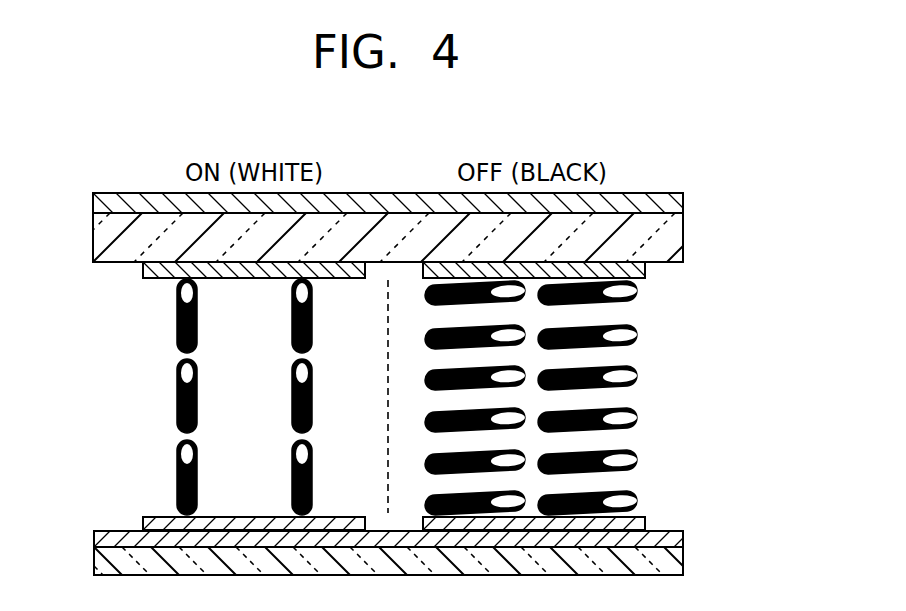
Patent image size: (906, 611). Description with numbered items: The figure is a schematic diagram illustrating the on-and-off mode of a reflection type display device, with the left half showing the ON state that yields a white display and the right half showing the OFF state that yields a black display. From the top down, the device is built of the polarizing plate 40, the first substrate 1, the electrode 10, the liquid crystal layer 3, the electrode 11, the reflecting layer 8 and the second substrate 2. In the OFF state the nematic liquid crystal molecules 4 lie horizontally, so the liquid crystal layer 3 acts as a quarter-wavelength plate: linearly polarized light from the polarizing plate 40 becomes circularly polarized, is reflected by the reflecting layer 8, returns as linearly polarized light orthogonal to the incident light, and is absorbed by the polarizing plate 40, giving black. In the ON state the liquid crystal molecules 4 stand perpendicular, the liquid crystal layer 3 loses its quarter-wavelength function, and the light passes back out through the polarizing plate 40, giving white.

The polarizing plate 40 is at (670, 203).
The first substrate 1 is at (675, 238).
The electrode 10 is at (145, 270).
The nematic liquid crystal molecules 4 is at (184, 370).
The liquid crystal layer 3 is at (643, 387).
The electrode 11 is at (148, 518).
The reflecting layer 8 is at (683, 540).
The second substrate 2 is at (670, 560).